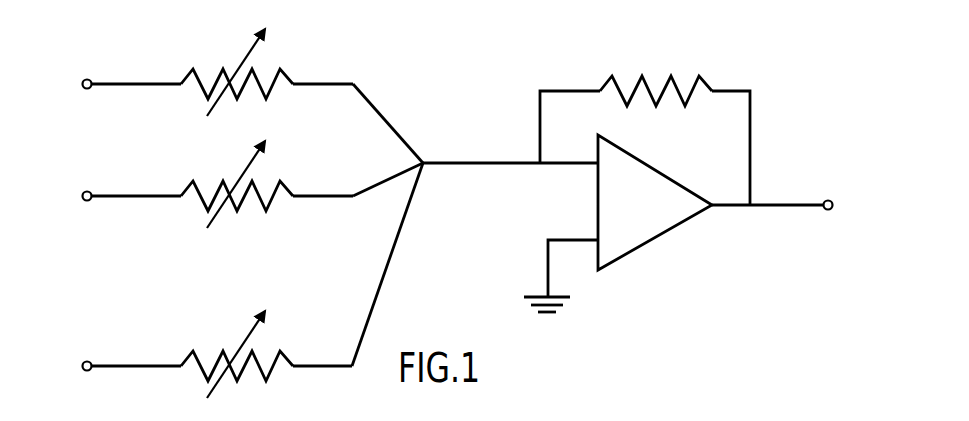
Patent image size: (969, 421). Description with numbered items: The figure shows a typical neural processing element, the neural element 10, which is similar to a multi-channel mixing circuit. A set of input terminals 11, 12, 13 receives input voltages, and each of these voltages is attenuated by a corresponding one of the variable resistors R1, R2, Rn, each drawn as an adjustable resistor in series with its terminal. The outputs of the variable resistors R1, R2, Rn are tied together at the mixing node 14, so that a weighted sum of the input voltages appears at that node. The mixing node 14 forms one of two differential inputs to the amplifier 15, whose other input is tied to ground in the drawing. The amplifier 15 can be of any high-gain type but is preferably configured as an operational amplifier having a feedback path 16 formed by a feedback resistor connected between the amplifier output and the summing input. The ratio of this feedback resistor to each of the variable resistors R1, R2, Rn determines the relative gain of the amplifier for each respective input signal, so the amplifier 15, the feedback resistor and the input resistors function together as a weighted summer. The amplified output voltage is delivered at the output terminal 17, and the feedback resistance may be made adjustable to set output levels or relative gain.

The neural element 10 is at (814, 32).
The input terminal 11 is at (87, 78).
The input terminal 12 is at (87, 190).
The input terminal 13 is at (87, 360).
The mixing node 14 is at (424, 162).
The amplifier 15 is at (657, 237).
The feedback path 16 is at (697, 82).
The output terminal 17 is at (829, 211).
The variable resistor R1 is at (237, 72).
The variable resistor R2 is at (237, 184).
The variable resistor Rn is at (237, 354).